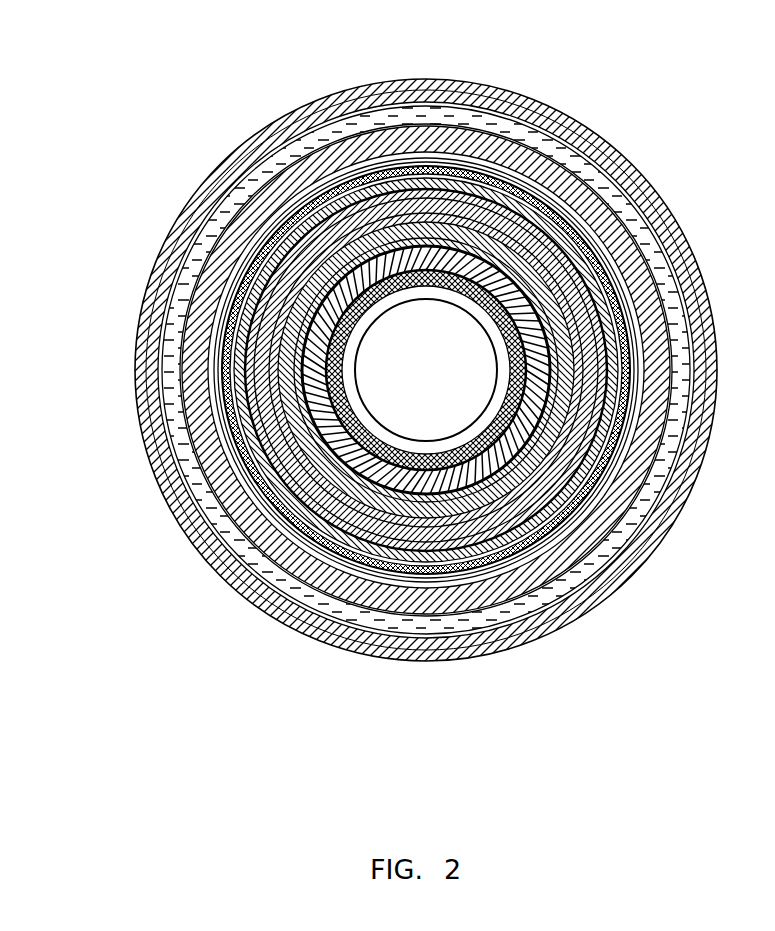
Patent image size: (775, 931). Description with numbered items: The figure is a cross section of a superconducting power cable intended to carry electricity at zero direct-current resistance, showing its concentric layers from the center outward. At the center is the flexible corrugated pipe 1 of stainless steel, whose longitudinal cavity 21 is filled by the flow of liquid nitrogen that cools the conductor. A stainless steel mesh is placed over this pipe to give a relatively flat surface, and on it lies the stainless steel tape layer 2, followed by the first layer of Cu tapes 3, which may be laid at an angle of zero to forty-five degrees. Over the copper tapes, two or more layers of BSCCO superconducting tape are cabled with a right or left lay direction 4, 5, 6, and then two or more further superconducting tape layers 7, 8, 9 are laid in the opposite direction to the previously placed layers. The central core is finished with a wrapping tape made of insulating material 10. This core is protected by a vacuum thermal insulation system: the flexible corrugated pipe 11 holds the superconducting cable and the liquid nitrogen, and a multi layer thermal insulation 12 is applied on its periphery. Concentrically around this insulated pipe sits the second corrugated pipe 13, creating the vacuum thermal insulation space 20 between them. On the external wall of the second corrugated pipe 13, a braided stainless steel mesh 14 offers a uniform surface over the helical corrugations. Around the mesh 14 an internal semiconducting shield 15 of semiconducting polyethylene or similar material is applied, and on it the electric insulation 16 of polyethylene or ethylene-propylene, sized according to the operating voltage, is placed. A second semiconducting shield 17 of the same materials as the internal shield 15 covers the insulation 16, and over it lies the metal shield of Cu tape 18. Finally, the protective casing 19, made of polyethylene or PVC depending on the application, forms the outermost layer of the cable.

The flexible corrugated pipe 1 is at (418, 265).
The stainless steel tape layer 2 is at (523, 213).
The first layer of Cu tapes 3 is at (552, 262).
The superconducting tape layer 4 is at (578, 300).
The superconducting tape layer 5 is at (562, 362).
The superconducting tape layer 6 is at (560, 408).
The superconducting tape layer 7 is at (553, 462).
The superconducting tape layer 8 is at (574, 477).
The superconducting tape layer 9 is at (472, 528).
The wrapping tape of insulating material 10 is at (418, 548).
The flexible corrugated pipe 11 is at (356, 540).
The multi layer thermal insulation 12 is at (268, 520).
The second corrugated pipe 13 is at (248, 492).
The braided stainless steel mesh 14 is at (186, 428).
The internal semiconducting shield 15 is at (183, 372).
The electric insulation 16 is at (180, 273).
The second semiconducting shield 17 is at (205, 197).
The metal shield of Cu tape 18 is at (262, 128).
The protective casing 19 is at (334, 72).
The vacuum thermal insulation space 20 is at (480, 160).
The longitudinal cavity 21 is at (421, 355).